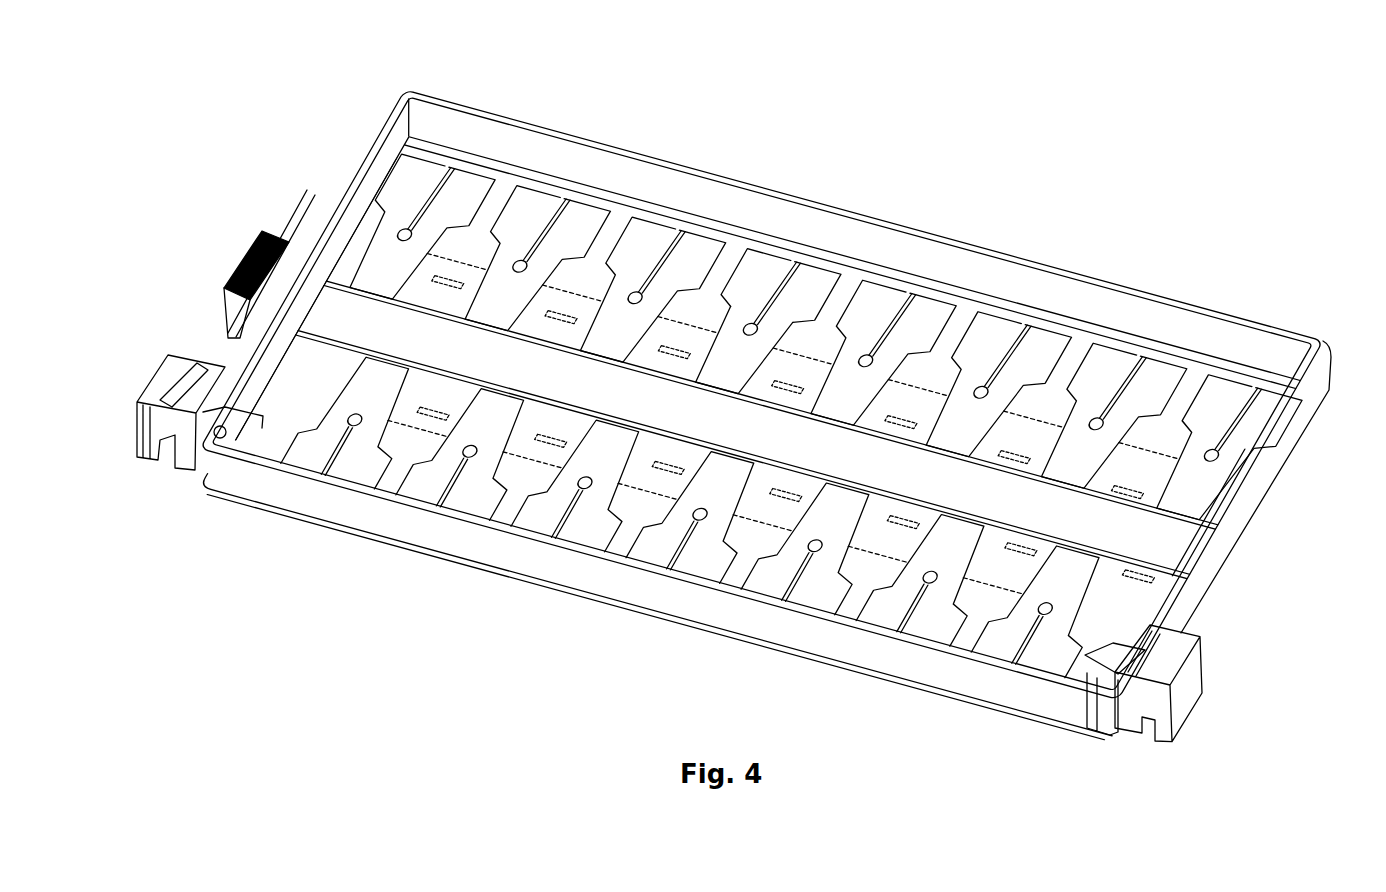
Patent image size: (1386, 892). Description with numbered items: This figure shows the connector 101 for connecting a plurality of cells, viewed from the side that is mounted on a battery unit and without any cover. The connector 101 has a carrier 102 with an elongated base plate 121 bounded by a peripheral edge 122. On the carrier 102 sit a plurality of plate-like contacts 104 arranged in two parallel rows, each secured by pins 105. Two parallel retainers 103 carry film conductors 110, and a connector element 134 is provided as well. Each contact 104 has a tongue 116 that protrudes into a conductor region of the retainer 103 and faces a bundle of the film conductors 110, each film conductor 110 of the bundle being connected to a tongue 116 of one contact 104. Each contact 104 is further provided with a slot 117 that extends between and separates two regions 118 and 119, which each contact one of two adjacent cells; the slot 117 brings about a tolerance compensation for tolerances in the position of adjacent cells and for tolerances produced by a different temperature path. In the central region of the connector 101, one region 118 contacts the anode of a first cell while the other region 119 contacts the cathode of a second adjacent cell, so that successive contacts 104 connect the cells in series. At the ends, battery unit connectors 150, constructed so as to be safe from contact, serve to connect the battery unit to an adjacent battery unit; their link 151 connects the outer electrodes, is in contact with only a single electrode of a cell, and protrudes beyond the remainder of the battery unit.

The connector 101 is at (734, 435).
The carrier 102 is at (1177, 543).
The retainer 103 is at (333, 267).
The contact 104 is at (463, 400).
The pin 105 is at (817, 543).
The film conductor 110 is at (452, 278).
The tongue 116 is at (717, 373).
The slot 117 is at (820, 280).
The region 118 is at (757, 270).
The region 119 is at (838, 268).
The base plate 121 is at (1200, 373).
The peripheral edge 122 is at (1107, 308).
The connector element 134 is at (260, 246).
The battery unit connector 150 is at (173, 358).
The link 151 is at (250, 437).